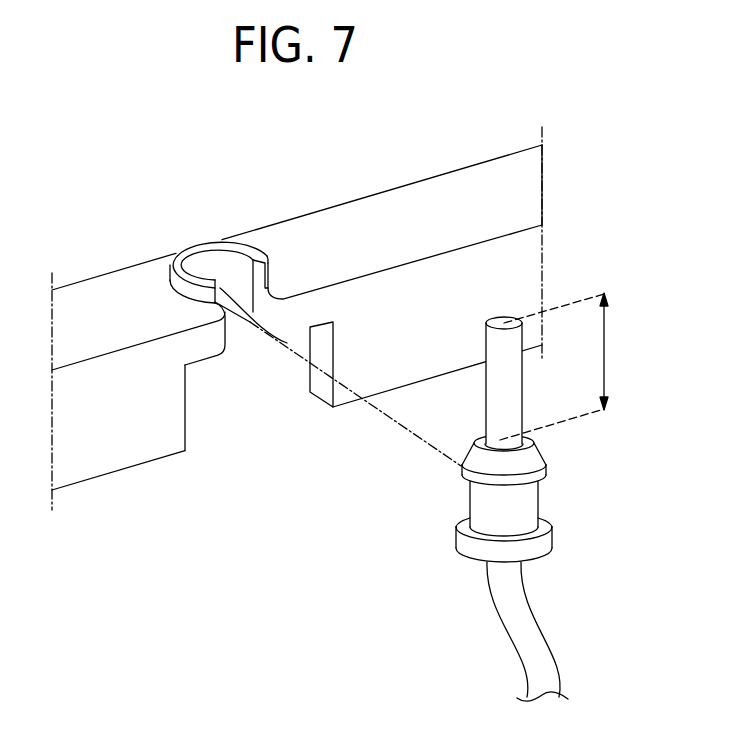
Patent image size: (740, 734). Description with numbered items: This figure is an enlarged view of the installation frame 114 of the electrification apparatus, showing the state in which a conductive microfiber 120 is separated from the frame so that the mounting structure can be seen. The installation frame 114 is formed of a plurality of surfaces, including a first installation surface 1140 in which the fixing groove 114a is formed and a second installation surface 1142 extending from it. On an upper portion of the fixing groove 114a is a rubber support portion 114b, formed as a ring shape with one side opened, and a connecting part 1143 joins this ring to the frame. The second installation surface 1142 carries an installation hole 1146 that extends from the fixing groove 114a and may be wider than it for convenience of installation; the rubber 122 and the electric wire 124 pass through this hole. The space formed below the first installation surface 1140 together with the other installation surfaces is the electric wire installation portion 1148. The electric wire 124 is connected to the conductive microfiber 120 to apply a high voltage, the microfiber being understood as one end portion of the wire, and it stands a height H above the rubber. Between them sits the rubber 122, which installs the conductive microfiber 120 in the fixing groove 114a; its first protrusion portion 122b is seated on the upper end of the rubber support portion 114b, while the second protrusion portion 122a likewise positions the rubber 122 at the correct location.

The installation frame 114 is at (297, 357).
The fixing groove 114a is at (222, 258).
The rubber support portion 114b is at (181, 229).
The first installation surface 1140 is at (402, 215).
The second installation surface 1142 is at (443, 357).
The connecting tab 1143 is at (238, 338).
The installation hole 1146 is at (213, 427).
The electric wire installation portion 1148 is at (302, 373).
The conductive microfiber 120 is at (508, 390).
The rubber 122 is at (549, 500).
The second protrusion portion 122a is at (543, 543).
The first protrusion portion 122b is at (537, 473).
The electric wire 124 is at (532, 635).
The pin height H is at (559, 366).